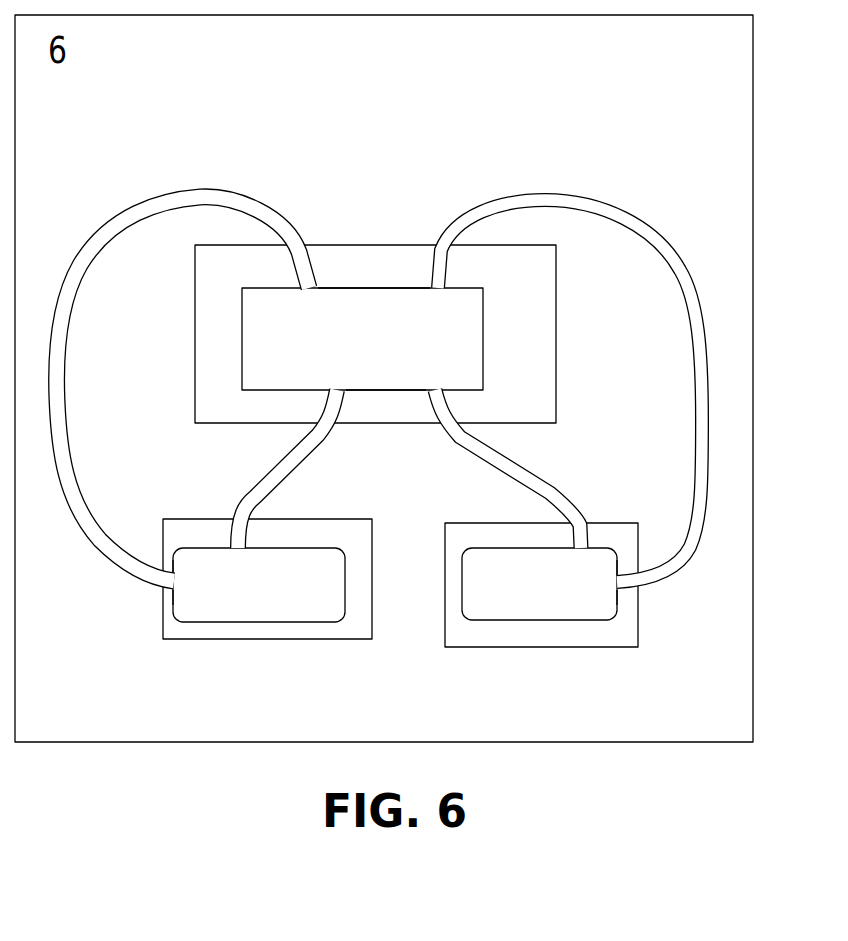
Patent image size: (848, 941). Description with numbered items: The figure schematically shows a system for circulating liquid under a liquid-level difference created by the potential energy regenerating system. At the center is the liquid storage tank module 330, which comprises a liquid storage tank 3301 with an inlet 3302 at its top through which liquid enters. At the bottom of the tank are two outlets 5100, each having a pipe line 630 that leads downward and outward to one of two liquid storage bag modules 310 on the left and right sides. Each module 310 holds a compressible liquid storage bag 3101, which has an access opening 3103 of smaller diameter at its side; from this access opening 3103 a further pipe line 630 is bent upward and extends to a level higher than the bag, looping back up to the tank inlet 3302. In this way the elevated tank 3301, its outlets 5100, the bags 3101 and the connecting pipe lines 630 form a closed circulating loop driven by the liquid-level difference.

The liquid storage bag module 310 is at (400, 583).
The compressible liquid storage bag 3101 is at (245, 623).
The access opening 3103 is at (168, 584).
The liquid storage tank module 330 is at (375, 334).
The liquid storage tank 3301 is at (242, 323).
The inlet 3302 is at (433, 284).
The outlet 5100 is at (437, 389).
The cable 630 is at (155, 198).